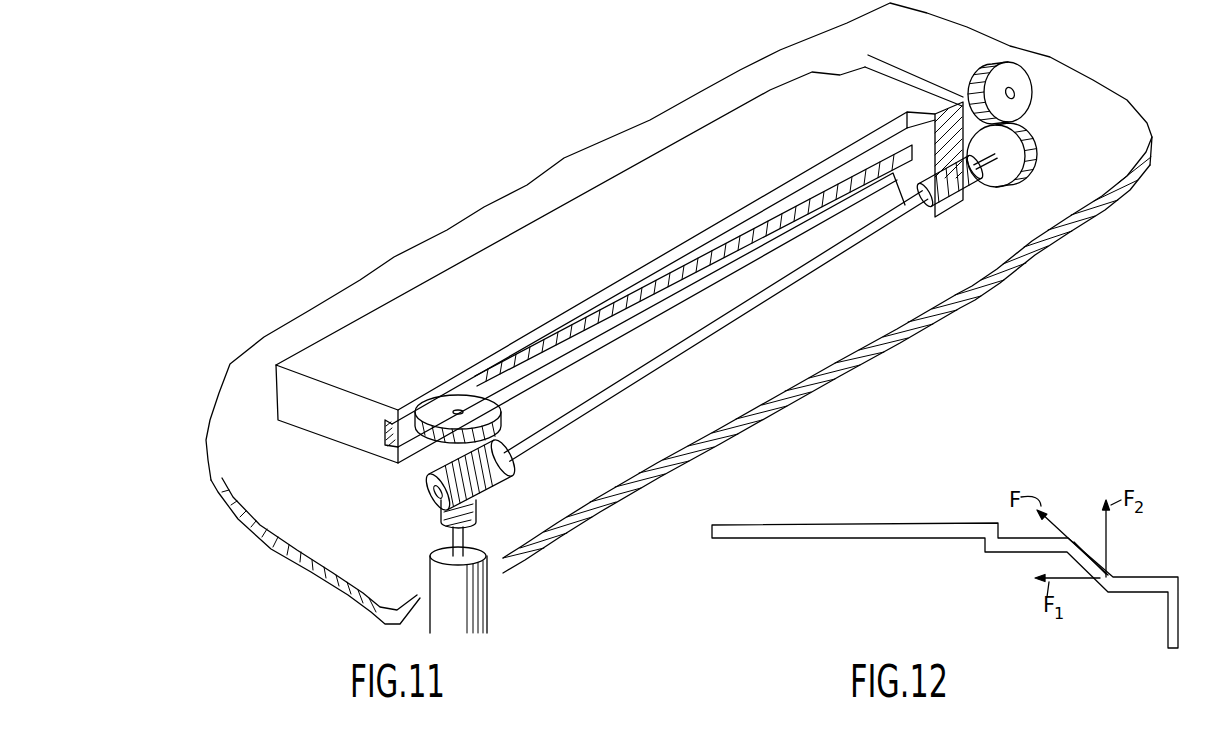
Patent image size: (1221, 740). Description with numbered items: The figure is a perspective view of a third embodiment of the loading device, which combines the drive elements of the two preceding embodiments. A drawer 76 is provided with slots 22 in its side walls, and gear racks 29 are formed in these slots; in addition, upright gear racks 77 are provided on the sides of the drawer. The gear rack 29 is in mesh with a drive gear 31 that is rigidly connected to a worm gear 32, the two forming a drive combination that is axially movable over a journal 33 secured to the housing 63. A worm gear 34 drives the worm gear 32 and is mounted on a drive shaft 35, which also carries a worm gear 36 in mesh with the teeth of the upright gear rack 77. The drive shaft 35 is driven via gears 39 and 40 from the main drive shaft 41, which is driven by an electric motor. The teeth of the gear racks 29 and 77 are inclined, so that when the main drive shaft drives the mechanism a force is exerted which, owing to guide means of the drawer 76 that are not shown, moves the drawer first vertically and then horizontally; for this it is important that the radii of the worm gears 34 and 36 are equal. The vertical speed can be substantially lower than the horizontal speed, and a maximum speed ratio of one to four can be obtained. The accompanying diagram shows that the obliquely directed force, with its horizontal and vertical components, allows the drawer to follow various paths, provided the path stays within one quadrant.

The slot 22 is at (385, 432).
The gear rack 29 is at (641, 290).
The drive gear 31 is at (483, 415).
The worm gear 32 is at (477, 503).
The journal 33 is at (452, 535).
The worm gear 34 is at (493, 482).
The drive shaft 35 is at (780, 291).
The worm gear 36 is at (972, 190).
The gear 39 is at (1027, 177).
The gear 40 is at (1018, 108).
The main drive shaft 41 is at (948, 82).
The housing 63 is at (945, 283).
The drawer 76 is at (320, 407).
The upright gear rack 77 is at (947, 133).